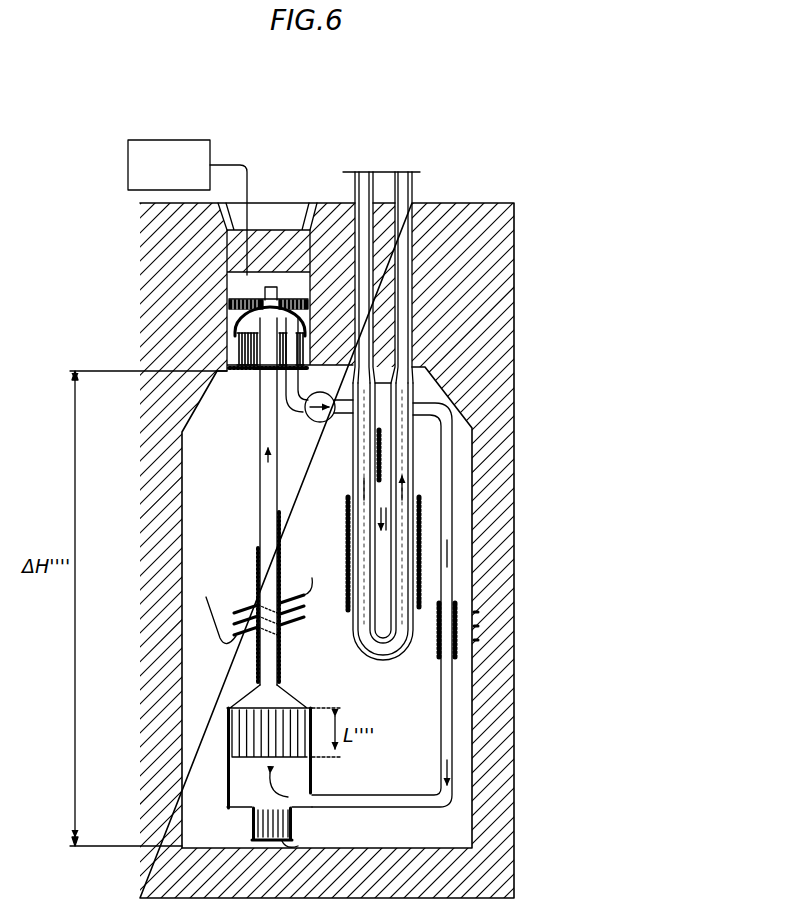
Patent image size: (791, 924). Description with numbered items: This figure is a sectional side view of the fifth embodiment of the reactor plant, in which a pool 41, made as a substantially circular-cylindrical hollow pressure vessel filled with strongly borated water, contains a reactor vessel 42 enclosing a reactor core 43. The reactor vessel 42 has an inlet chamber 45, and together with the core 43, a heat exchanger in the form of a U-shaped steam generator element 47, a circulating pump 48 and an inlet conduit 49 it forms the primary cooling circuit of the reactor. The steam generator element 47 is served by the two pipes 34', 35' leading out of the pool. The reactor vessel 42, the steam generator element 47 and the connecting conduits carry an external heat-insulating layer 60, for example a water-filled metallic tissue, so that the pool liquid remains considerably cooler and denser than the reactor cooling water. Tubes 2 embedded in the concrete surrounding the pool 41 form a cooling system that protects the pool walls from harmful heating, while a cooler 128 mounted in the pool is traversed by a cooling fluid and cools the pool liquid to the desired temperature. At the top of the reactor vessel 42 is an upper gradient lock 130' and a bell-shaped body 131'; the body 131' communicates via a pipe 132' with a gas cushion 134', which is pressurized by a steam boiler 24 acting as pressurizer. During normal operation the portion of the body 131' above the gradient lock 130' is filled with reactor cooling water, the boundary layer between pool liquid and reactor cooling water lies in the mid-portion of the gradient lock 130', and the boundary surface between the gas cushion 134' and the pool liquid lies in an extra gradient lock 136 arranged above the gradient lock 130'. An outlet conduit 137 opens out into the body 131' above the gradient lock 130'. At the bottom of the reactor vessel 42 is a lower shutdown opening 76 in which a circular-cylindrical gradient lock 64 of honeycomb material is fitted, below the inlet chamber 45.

The tubes 2 is at (476, 638).
The steam boiler 24 is at (190, 158).
The inlet pipe 34' is at (417, 261).
The outlet pipe 35' is at (381, 261).
The pool 41 is at (190, 542).
The reactor vessel 42 is at (255, 672).
The reactor core 43 is at (245, 733).
The inlet chamber 45 is at (295, 773).
The U-shaped steam generator element 47 is at (350, 484).
The circulating pump 48 is at (320, 422).
The inlet conduit 49 is at (447, 663).
The heat-insulating layer 60 is at (345, 533).
The gradient lock 64 is at (262, 818).
The lower shutdown opening 76 is at (282, 846).
The cooler 128 is at (302, 622).
The upper gradient lock 130' is at (256, 378).
The bell-shaped body 131' is at (194, 318).
The pipe 132' is at (302, 219).
The gas cushion 134' is at (196, 280).
The extra gradient lock 136 is at (238, 288).
The outlet conduit 137 is at (293, 388).